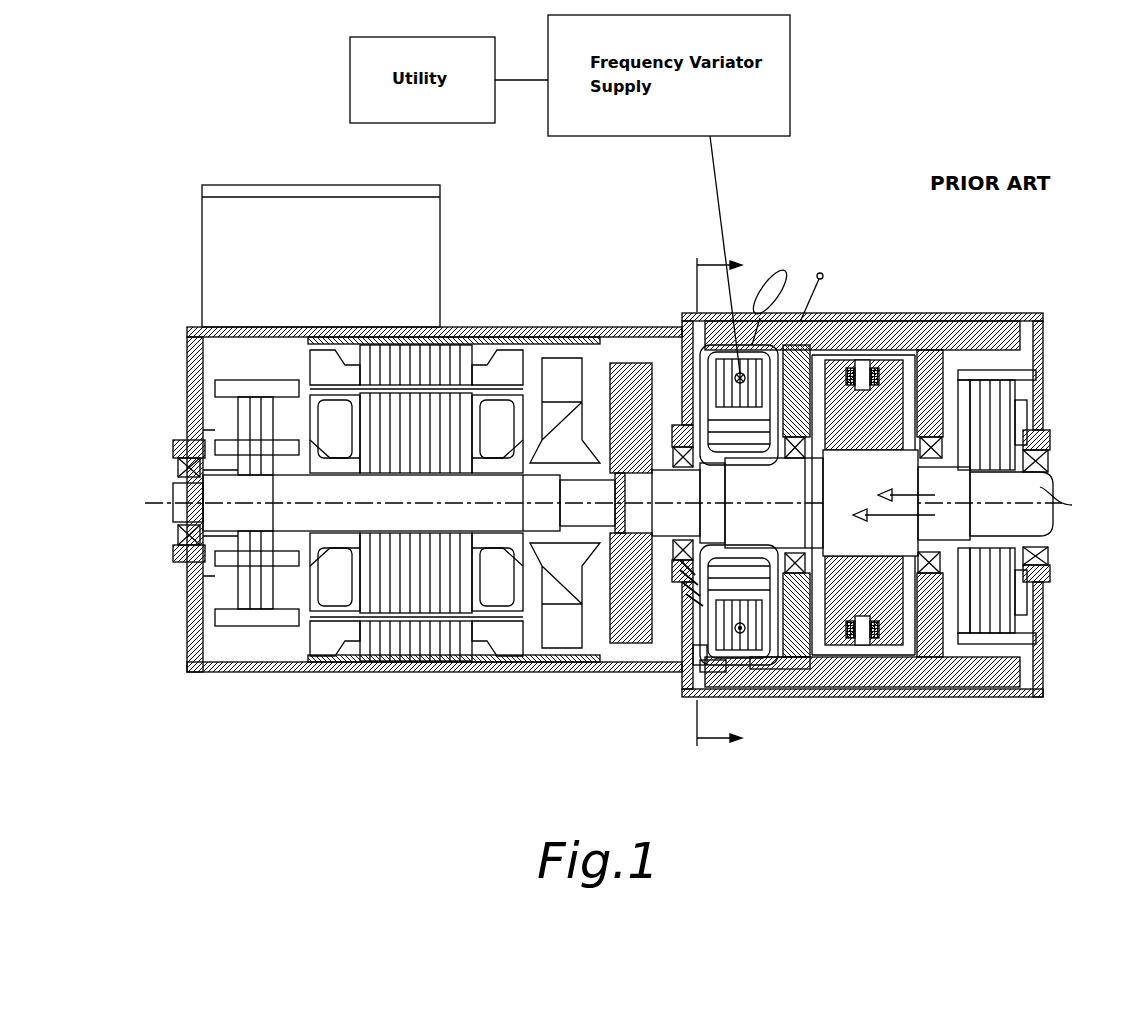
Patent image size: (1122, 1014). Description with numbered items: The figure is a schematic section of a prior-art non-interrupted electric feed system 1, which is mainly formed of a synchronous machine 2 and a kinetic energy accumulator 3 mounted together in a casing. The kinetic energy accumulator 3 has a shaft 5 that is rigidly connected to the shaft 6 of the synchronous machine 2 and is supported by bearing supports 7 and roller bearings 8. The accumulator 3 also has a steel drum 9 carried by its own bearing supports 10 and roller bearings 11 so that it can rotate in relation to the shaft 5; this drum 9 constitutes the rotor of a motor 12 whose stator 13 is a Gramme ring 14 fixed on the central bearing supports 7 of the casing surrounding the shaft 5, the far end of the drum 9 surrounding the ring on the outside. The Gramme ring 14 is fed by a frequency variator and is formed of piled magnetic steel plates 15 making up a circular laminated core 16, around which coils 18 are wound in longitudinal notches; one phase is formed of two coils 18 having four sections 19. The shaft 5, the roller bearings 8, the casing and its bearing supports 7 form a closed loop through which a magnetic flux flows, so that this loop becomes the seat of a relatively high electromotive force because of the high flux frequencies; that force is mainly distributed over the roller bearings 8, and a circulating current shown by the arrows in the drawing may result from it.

The non-interrupted electric feed system 1 is at (606, 240).
The synchronous machine 2 is at (595, 780).
The kinetic energy accumulator 3 is at (1040, 780).
The shaft 5 is at (1050, 432).
The shaft of the synchronous machine 6 is at (210, 497).
The bearing supports 7 is at (688, 640).
The roller bearings 8 is at (675, 555).
The steel drum 9 is at (880, 335).
The bearing supports 10 is at (833, 405).
The roller bearings 11 is at (940, 451).
The motor 12 is at (748, 236).
The stator 13 is at (692, 318).
The Gramme ring 14 is at (792, 690).
The magnetic steel plates 15 is at (783, 298).
The circular laminated core 16 is at (760, 690).
The coils 18 is at (682, 690).
The sections 19 is at (694, 612).